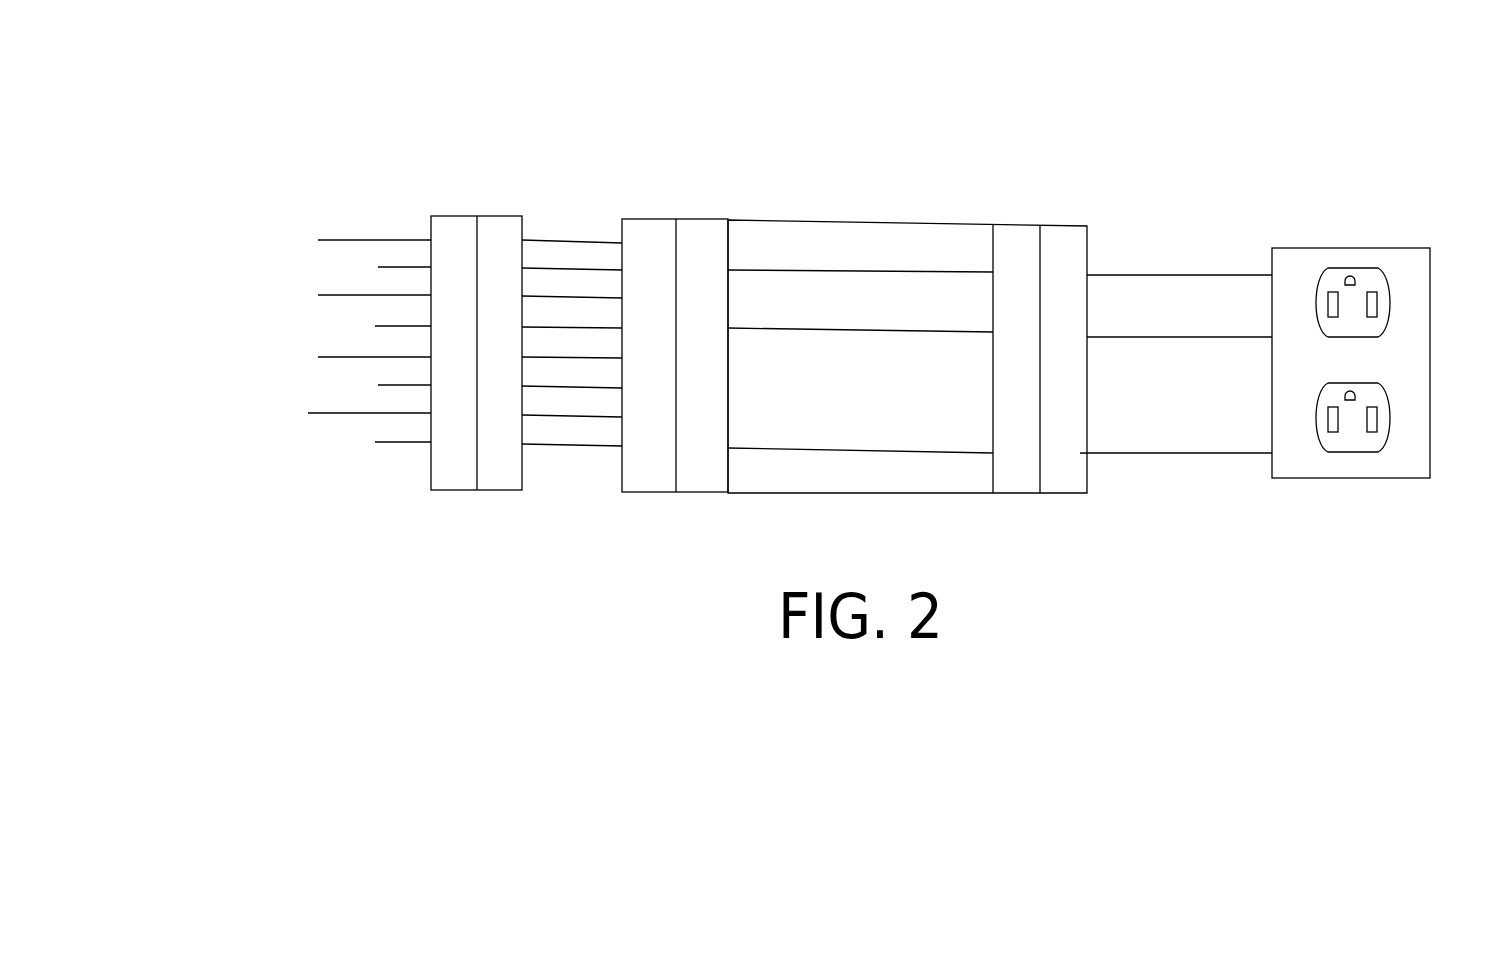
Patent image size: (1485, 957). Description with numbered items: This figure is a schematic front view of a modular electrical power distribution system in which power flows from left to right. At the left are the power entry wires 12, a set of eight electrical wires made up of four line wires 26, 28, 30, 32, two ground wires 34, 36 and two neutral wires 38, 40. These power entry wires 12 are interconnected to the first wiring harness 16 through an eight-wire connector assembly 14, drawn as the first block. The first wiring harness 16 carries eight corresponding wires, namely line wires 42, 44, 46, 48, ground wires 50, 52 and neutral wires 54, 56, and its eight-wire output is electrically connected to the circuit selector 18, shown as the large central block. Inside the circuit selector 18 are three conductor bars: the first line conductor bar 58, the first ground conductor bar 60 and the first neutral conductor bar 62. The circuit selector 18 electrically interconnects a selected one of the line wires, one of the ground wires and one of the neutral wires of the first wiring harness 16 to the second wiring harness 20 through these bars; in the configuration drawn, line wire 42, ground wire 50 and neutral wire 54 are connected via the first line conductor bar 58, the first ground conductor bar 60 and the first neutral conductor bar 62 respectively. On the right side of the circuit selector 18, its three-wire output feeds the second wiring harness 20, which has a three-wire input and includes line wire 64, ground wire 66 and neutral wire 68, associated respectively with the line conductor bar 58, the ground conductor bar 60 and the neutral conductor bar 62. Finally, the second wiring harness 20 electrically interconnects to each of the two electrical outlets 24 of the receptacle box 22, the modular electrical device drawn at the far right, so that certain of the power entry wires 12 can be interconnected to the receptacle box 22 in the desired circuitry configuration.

The power entry wires 12 is at (307, 188).
The connector assembly 14 is at (459, 192).
The first wiring harness 16 is at (586, 200).
The circuit selector 18 is at (848, 185).
The second wiring harness 20 is at (1170, 222).
The receptacle box 22 is at (1332, 225).
The electrical outlets 24 is at (1388, 293).
The line wire 26 is at (318, 442).
The line wire 28 is at (258, 413).
The line wire 30 is at (313, 385).
The line wire 32 is at (262, 357).
The ground wire 34 is at (320, 326).
The ground wire 36 is at (262, 295).
The neutral wire 38 is at (337, 267).
The neutral wire 40 is at (265, 240).
The line wire 42 is at (597, 446).
The line wire 44 is at (597, 417).
The line wire 46 is at (597, 388).
The line wire 48 is at (597, 358).
The ground wire 50 is at (597, 328).
The ground wire 52 is at (597, 298).
The neutral wire 54 is at (597, 270).
The neutral wire 56 is at (597, 243).
The first line conductor bar 58 is at (828, 452).
The first ground conductor bar 60 is at (848, 332).
The first neutral conductor bar 62 is at (865, 272).
The line wire 64 is at (1128, 453).
The ground wire 66 is at (1128, 337).
The neutral wire 68 is at (1140, 274).